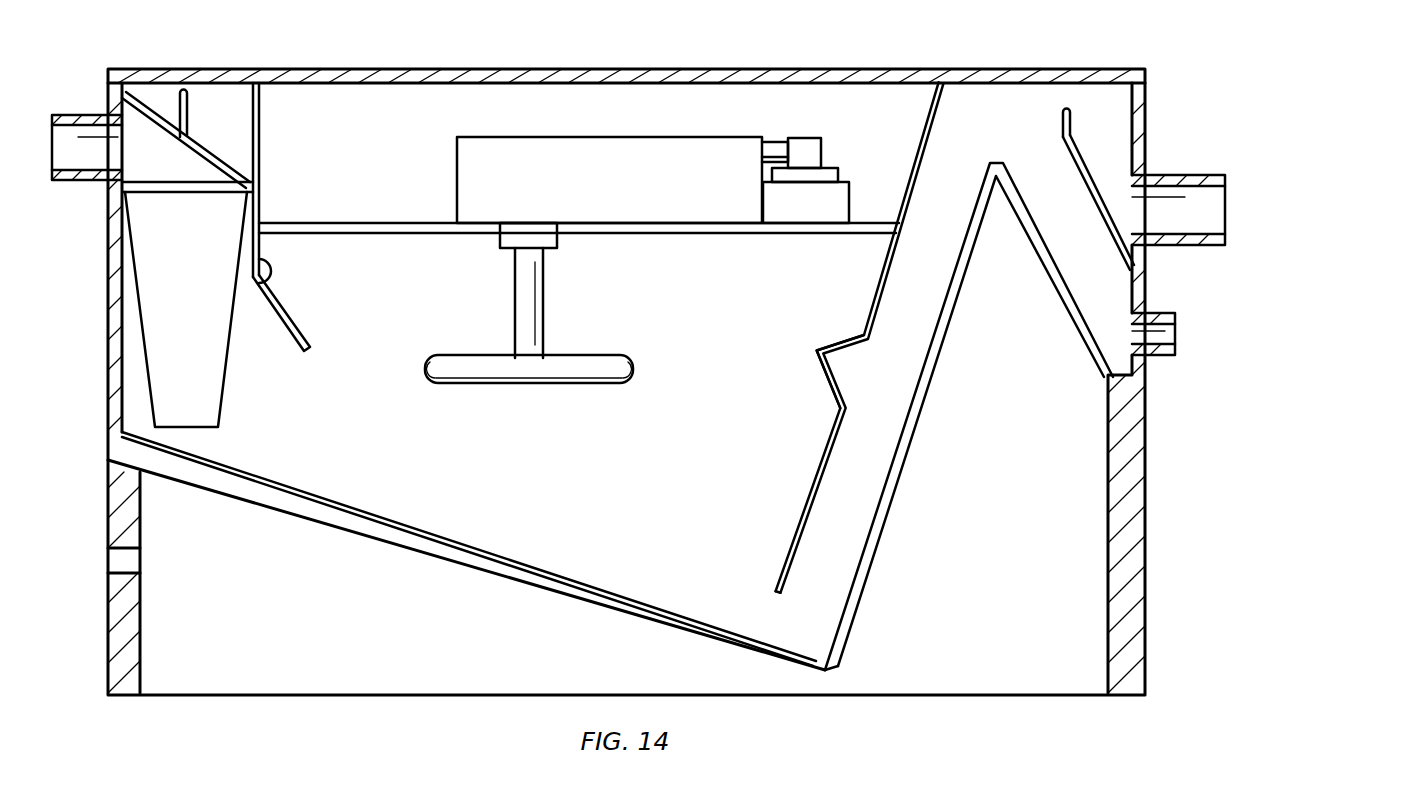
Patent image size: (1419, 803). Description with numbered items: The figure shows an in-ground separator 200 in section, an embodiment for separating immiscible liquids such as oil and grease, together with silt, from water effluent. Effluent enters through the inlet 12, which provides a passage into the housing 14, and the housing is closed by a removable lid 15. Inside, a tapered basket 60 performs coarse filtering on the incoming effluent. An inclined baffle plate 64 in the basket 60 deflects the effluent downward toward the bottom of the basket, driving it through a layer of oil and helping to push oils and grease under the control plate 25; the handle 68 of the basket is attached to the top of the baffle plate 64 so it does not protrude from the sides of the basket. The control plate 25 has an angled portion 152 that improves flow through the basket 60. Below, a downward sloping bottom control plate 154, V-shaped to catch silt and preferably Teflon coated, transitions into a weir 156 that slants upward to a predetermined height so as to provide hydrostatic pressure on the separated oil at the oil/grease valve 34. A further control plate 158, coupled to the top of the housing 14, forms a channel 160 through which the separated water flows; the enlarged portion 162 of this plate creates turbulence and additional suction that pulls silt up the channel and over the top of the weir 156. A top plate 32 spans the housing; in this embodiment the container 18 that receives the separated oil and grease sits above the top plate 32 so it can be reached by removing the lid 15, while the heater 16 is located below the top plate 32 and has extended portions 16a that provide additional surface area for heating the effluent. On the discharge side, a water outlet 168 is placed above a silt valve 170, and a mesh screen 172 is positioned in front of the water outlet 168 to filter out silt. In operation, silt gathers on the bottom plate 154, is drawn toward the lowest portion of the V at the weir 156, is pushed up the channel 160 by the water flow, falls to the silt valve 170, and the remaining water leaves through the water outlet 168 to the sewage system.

The inlet 12 is at (66, 116).
The housing 14 is at (108, 268).
The lid 15 is at (812, 68).
The heater 16 is at (544, 296).
The extended portions 16a is at (424, 368).
The container 18 is at (594, 196).
The control plate 25 is at (262, 128).
The top plate 32 is at (356, 222).
The oil/grease valve 34 is at (822, 156).
The basket 60 is at (205, 428).
The baffle plate 64 is at (198, 144).
The handle 68 is at (174, 106).
The angled portion 152 is at (304, 334).
The bottom control plate 154 is at (454, 540).
The weir 156 is at (922, 404).
The control plate 158 is at (800, 496).
The channel 160 is at (814, 590).
The enlarged portion 162 is at (840, 345).
The water outlet 168 is at (1186, 174).
The silt valve 170 is at (1160, 358).
The mesh screen 172 is at (1060, 152).
The in-ground separator 200 is at (1304, 201).